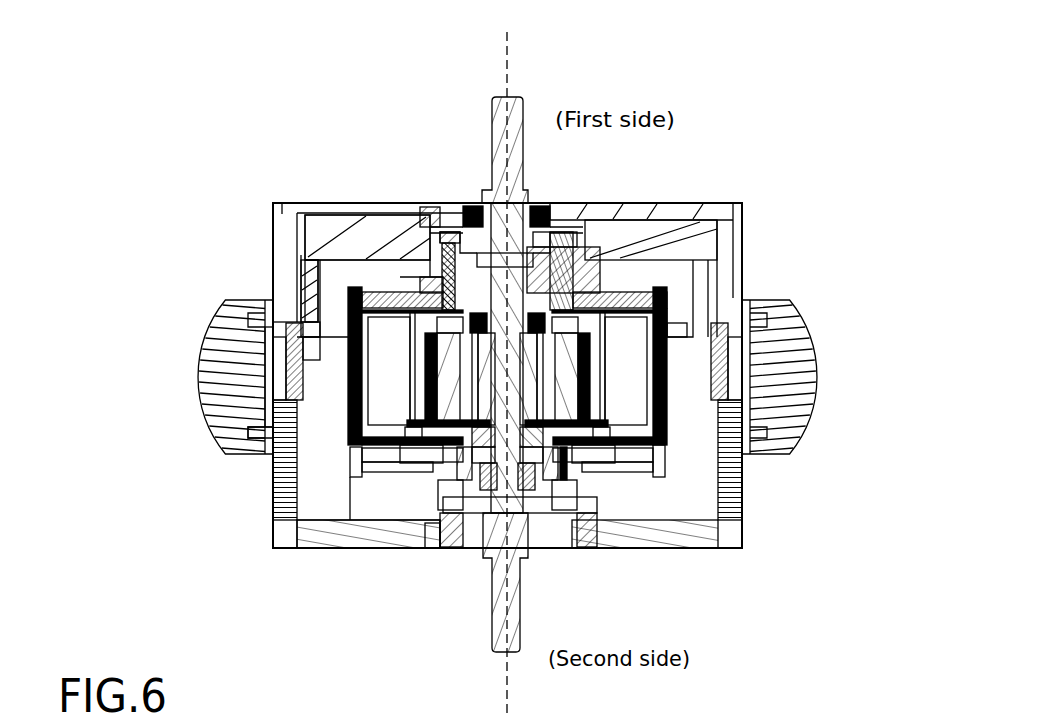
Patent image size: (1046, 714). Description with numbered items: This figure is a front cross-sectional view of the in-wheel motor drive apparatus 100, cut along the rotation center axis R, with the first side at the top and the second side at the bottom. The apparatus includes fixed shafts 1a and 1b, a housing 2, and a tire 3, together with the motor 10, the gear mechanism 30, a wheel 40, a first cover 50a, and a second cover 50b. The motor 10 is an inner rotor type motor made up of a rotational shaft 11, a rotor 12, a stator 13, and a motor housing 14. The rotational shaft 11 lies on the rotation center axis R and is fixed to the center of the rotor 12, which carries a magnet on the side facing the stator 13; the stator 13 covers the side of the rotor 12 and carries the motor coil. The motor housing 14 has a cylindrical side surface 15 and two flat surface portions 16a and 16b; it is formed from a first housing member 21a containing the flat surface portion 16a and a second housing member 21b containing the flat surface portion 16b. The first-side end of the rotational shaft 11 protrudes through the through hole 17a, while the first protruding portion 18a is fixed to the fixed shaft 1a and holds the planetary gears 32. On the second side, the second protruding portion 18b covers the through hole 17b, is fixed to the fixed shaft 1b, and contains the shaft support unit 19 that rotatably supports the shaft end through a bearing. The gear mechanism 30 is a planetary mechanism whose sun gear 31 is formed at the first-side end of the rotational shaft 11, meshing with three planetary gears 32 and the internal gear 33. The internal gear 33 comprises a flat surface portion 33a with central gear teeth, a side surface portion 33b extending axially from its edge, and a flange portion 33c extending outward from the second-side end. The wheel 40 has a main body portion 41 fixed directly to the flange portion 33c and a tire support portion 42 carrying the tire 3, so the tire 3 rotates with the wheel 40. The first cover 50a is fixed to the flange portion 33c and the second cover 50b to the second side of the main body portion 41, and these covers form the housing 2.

The rotation center axis R is at (510, 66).
The in-wheel motor drive apparatus 100 is at (722, 103).
The fixed shaft 1a is at (518, 113).
The fixed shaft 1b is at (496, 645).
The housing 2 is at (497, 344).
The tire 3 is at (206, 378).
The motor 10 is at (517, 381).
The rotational shaft 11 is at (713, 217).
The rotor 12 is at (577, 452).
The stator 13 is at (650, 463).
The motor housing 14 is at (348, 470).
The side surface 15 is at (727, 356).
The flat surface portion 16a is at (393, 290).
The flat surface portion 16b is at (610, 462).
The through hole 17a is at (438, 218).
The through hole 17b is at (407, 453).
The first protruding portion 18a is at (473, 205).
The second protruding portion 18b is at (588, 522).
The shaft support unit 19 is at (463, 498).
The first housing member 21a is at (340, 285).
The second housing member 21b is at (345, 452).
The gear mechanism 30 is at (612, 214).
The sun gear 31 is at (522, 218).
The planetary gear 32 is at (643, 216).
The internal gear 33 is at (332, 238).
The flat surface portion 33a is at (344, 165).
The side surface portion 33b is at (307, 277).
The flange portion 33c is at (290, 323).
The wheel 40 is at (263, 378).
The main body portion 41 is at (277, 372).
The tire support portion 42 is at (255, 458).
The first cover 50a is at (284, 214).
The second cover 50b is at (375, 535).